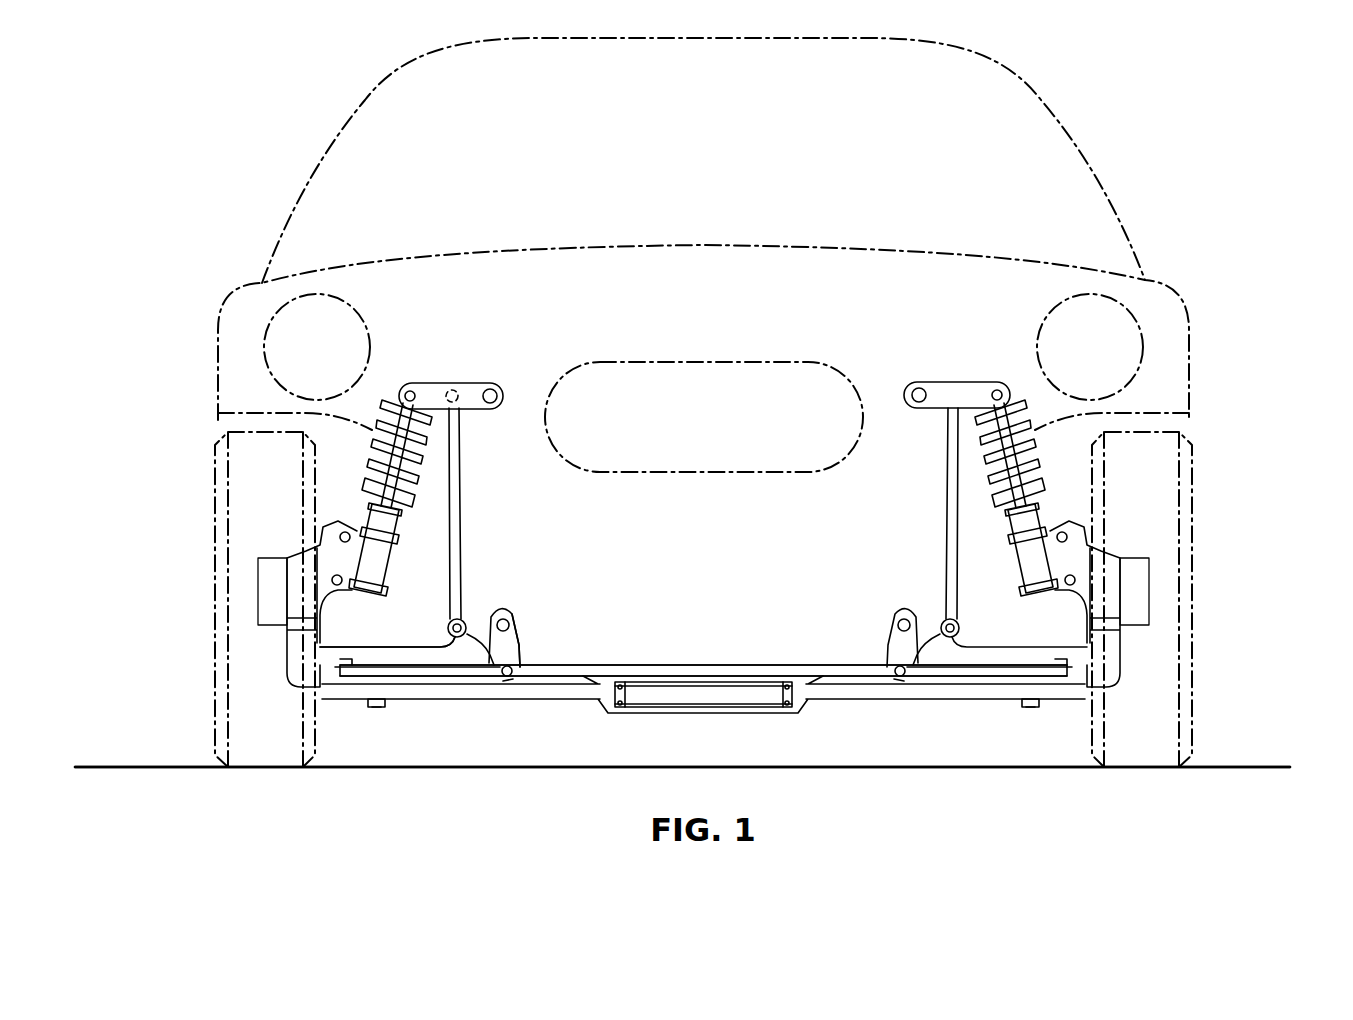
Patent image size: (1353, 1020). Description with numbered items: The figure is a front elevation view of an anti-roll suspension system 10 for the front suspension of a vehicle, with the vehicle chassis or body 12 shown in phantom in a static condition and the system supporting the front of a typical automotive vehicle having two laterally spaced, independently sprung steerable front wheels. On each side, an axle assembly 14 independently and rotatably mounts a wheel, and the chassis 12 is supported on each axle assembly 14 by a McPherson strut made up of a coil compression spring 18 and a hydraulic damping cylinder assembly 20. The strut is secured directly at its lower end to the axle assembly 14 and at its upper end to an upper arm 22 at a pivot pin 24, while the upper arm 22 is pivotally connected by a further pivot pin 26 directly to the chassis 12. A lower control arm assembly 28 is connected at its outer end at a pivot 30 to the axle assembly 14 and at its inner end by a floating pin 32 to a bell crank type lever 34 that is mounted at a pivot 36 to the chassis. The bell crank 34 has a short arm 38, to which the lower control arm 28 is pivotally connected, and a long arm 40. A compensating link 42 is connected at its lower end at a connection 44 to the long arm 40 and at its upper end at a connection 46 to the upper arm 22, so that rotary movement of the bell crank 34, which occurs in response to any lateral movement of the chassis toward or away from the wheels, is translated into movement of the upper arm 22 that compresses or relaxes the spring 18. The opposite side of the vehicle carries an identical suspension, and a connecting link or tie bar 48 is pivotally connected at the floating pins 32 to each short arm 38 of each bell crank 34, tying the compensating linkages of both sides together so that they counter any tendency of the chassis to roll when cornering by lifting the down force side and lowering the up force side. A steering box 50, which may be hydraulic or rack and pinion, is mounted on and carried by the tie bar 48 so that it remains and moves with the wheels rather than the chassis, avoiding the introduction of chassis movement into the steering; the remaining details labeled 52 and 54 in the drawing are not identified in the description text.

The anti-roll suspension system 10 is at (478, 800).
The vehicle chassis or body 12 is at (360, 119).
The axle assembly 14 is at (258, 578).
The coil compression spring 18 is at (397, 456).
The hydraulic damping cylinder assembly 20 is at (400, 522).
The upper arm 22 is at (440, 385).
The pivot pin 24 is at (405, 388).
The pivot pin 26 is at (497, 390).
The lower control arm assembly 28 is at (432, 672).
The pivot 30 is at (293, 647).
The floating pin 32 is at (502, 680).
The bell crank type lever 34 is at (505, 603).
The pivot 36 is at (517, 615).
The short arm 38 is at (515, 655).
The long arm 40 is at (472, 620).
The compensating link 42 is at (462, 519).
The lower end connection 44 is at (448, 629).
The upper end connection 46 is at (458, 390).
The connecting link or bar 48 is at (678, 665).
The steering box 50 is at (737, 690).
The support rail 52 is at (540, 699).
The fastener 54 is at (340, 690).